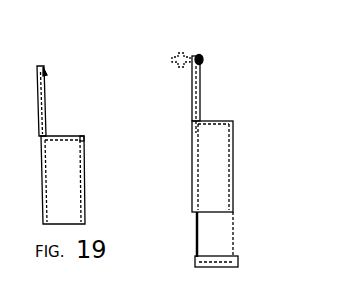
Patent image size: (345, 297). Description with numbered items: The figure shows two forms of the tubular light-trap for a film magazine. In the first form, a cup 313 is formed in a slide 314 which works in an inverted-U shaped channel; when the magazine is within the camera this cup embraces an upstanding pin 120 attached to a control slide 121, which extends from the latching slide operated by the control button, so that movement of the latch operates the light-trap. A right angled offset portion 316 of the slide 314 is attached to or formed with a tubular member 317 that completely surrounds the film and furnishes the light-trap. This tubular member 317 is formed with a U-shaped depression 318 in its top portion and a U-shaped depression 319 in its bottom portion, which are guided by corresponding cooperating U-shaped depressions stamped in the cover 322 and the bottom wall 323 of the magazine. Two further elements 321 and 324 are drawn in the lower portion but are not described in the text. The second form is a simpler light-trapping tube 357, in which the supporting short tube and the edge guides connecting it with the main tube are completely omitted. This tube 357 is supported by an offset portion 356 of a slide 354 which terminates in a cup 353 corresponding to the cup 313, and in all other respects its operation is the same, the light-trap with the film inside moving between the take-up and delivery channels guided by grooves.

In FIG. 18A, the upstanding pin 120 is at (188, 50).
In FIG. 18A, the control slide 121 is at (172, 61).
In FIG. 18A, the cup 313 is at (204, 60).
In FIG. 18A, the slide 314 is at (200, 86).
In FIG. 18A, the right angled offset portion 316 is at (191, 134).
In FIG. 18A, the tubular member 317 is at (212, 166).
In FIG. 18A, the U-shaped depression 318 is at (233, 135).
In FIG. 18A, the U-shaped depression 319 is at (193, 171).
In FIG. 18A, the lower extension 321 is at (215, 234).
In FIG. 18A, the cover 322 is at (196, 233).
In FIG. 18A, the bottom wall 323 is at (239, 246).
In FIG. 18A, the base plate 324 is at (238, 263).
In FIG. 19, the cup 353 is at (46, 76).
In FIG. 19, the slide 354 is at (45, 103).
In FIG. 19, the offset portion 356 is at (85, 139).
In FIG. 19, the light-trapping tube 357 is at (63, 180).